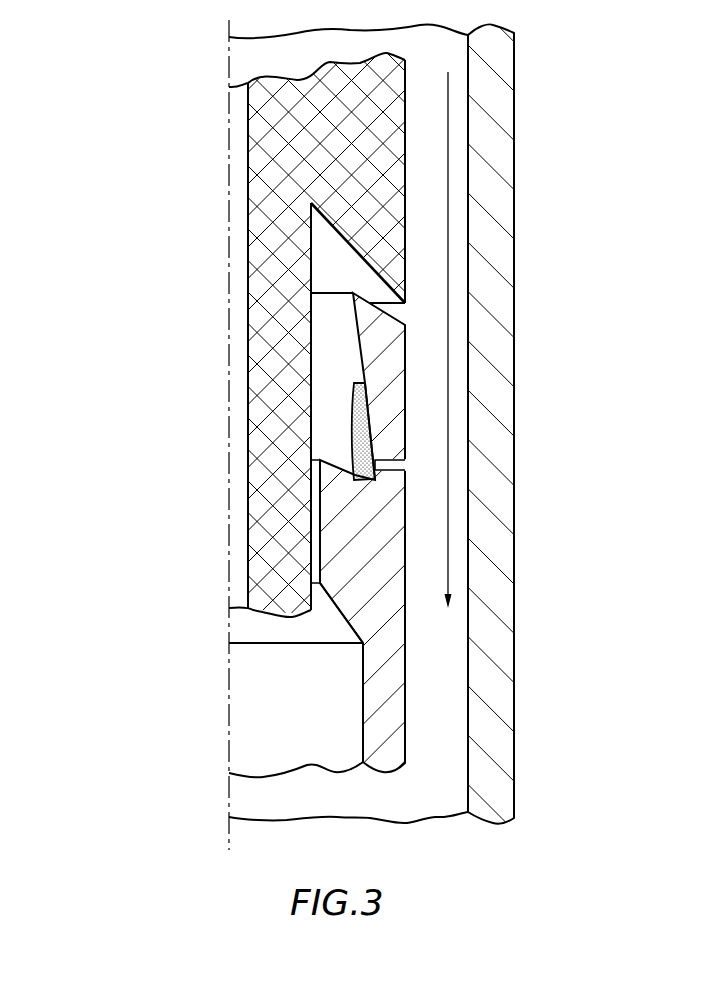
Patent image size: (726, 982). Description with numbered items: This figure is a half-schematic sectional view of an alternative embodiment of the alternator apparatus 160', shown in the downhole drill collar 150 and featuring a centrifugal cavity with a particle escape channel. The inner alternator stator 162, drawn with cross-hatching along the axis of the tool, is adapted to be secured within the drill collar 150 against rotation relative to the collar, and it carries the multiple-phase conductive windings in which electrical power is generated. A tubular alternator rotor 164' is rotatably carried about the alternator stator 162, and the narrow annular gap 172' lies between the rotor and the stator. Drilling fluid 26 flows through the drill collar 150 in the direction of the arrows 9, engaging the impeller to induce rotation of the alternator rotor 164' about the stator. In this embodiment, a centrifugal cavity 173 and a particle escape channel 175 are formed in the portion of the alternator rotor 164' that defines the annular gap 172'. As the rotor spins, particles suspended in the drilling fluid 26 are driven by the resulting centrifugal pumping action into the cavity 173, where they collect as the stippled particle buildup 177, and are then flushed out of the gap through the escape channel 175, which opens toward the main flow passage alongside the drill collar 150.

The arrows 9 is at (448, 175).
The drilling fluid 26 is at (455, 694).
The drill collar 150 is at (515, 695).
The apparatus 160' is at (628, 299).
The inner alternator stator 162 is at (248, 556).
The alternator rotor 164' is at (444, 680).
The annular gap 172' is at (236, 521).
The centrifugal cavity 173 is at (360, 351).
The particle escape channel 175 is at (405, 468).
The particle buildup 177 is at (353, 427).